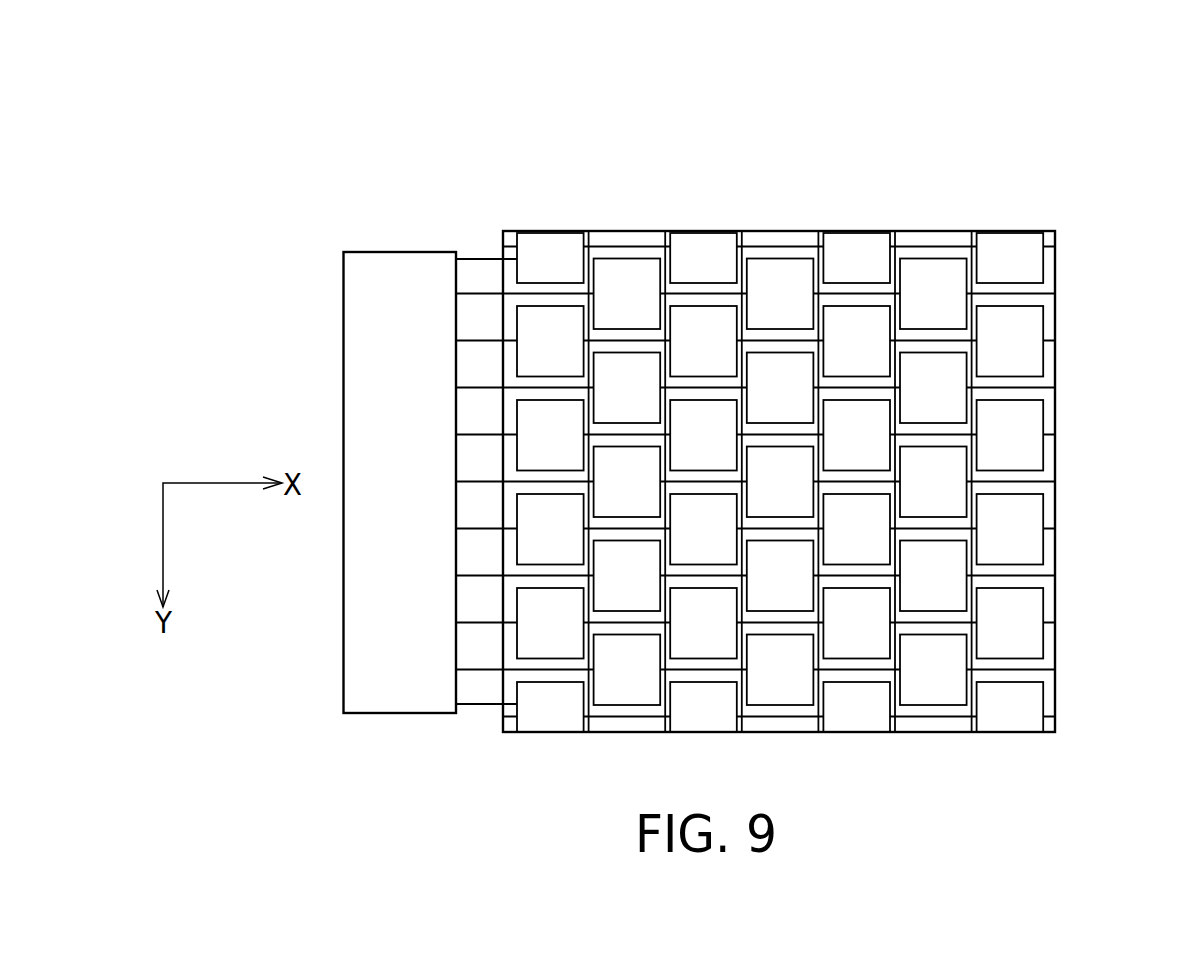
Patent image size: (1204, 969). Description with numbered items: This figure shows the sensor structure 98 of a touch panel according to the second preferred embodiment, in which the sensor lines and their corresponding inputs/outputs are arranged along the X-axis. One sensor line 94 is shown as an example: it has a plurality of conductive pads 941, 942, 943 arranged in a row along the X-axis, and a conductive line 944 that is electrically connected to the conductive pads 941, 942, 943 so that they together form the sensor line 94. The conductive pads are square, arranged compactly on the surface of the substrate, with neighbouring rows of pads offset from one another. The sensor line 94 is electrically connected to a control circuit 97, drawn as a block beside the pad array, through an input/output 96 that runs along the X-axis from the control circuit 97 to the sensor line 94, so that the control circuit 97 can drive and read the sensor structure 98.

The sensor structure 98 is at (1069, 150).
The control circuit 97 is at (400, 252).
The input/output 96 is at (480, 293).
The sensor line 94 is at (1072, 293).
The conductive pad 941 is at (628, 282).
The conductive pad 942 is at (782, 282).
The conductive pad 943 is at (933, 282).
The conductive line 944 is at (702, 290).